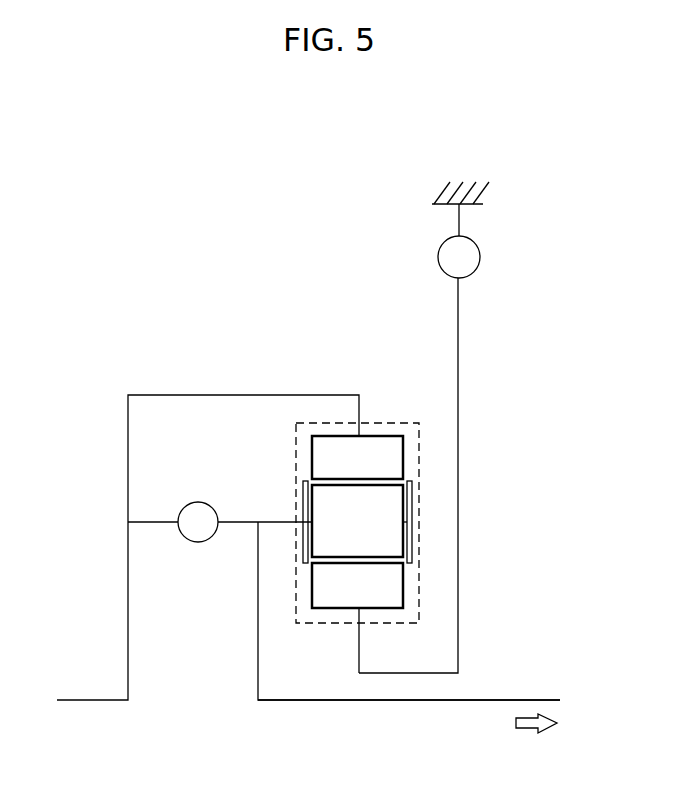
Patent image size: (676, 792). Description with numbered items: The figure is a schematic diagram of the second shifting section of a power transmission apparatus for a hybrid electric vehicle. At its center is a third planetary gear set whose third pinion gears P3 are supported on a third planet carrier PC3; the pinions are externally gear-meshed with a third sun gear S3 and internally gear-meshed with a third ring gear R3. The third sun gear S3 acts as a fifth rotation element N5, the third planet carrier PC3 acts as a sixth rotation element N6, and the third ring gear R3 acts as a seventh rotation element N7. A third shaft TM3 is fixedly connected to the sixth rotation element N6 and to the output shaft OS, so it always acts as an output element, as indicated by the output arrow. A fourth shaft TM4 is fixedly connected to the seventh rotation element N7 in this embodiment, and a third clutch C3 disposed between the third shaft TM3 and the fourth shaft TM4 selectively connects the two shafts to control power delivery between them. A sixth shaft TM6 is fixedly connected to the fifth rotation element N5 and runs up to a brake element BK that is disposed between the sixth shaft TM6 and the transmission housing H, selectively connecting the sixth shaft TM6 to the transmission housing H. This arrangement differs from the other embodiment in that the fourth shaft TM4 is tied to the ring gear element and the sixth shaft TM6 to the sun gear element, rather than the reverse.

The transmission housing H is at (455, 195).
The brake BK is at (459, 241).
The sixth shaft TM6 is at (459, 477).
The sixth rotation element N6 is at (319, 496).
The third planet carrier PC3 is at (299, 491).
The seventh rotation element N7 is at (357, 457).
The third ring gear R3 is at (357, 457).
The third pinion gears P3 is at (323, 548).
The fifth rotation element N5 is at (357, 618).
The third sun gear S3 is at (357, 618).
The third clutch C3 is at (245, 522).
The fourth shaft TM4 is at (128, 570).
The third shaft TM3 is at (258, 610).
The output shaft OS is at (535, 700).